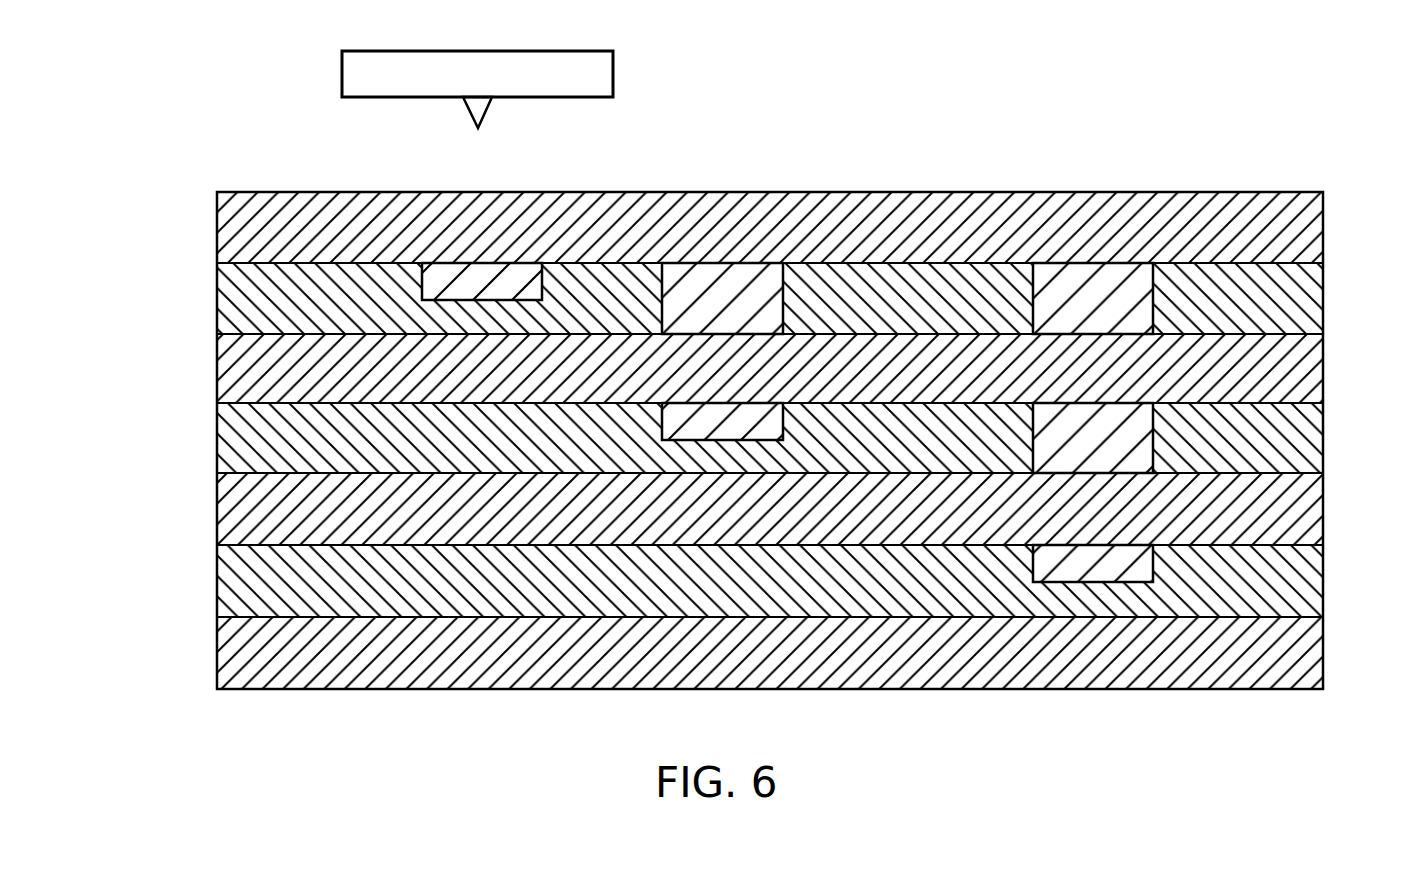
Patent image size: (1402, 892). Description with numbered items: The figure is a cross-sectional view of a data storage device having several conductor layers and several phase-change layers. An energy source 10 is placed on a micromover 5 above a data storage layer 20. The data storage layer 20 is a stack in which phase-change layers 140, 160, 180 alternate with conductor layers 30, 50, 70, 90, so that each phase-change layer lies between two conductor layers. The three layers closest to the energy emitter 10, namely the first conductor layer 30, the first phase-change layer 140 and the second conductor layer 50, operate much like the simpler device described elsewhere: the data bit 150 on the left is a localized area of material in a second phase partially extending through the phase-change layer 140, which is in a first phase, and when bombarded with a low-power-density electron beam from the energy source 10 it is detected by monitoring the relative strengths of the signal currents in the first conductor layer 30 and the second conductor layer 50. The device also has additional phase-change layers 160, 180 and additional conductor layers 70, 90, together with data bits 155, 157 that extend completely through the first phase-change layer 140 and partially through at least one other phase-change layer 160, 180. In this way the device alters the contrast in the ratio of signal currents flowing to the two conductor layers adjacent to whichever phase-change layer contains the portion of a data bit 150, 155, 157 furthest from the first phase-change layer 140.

The micromover 5 is at (603, 76).
The energy source 10 is at (492, 100).
The data storage layer 20 is at (176, 186).
The first conductor layer 30 is at (1302, 222).
The second conductor layer 50 is at (1302, 361).
The additional conductor layer 70 is at (1302, 502).
The additional conductor layer 90 is at (1302, 644).
The first phase-change layer 140 is at (1302, 292).
The data bit 150 is at (530, 283).
The data bit 155 is at (770, 297).
The data bit 157 is at (1143, 300).
The additional phase-change layer 160 is at (1302, 431).
The additional phase-change layer 180 is at (1302, 572).